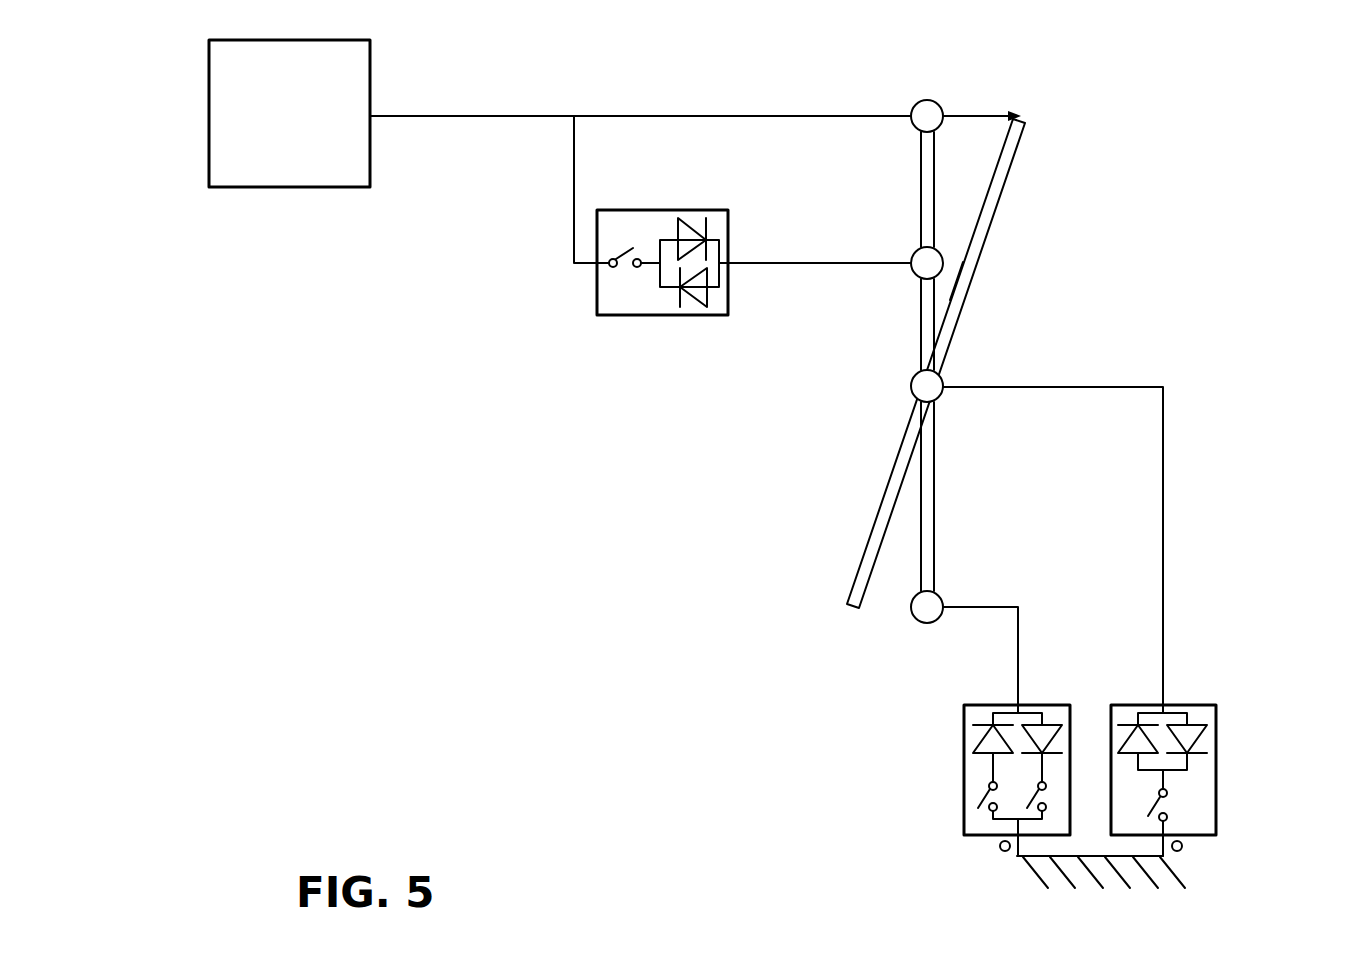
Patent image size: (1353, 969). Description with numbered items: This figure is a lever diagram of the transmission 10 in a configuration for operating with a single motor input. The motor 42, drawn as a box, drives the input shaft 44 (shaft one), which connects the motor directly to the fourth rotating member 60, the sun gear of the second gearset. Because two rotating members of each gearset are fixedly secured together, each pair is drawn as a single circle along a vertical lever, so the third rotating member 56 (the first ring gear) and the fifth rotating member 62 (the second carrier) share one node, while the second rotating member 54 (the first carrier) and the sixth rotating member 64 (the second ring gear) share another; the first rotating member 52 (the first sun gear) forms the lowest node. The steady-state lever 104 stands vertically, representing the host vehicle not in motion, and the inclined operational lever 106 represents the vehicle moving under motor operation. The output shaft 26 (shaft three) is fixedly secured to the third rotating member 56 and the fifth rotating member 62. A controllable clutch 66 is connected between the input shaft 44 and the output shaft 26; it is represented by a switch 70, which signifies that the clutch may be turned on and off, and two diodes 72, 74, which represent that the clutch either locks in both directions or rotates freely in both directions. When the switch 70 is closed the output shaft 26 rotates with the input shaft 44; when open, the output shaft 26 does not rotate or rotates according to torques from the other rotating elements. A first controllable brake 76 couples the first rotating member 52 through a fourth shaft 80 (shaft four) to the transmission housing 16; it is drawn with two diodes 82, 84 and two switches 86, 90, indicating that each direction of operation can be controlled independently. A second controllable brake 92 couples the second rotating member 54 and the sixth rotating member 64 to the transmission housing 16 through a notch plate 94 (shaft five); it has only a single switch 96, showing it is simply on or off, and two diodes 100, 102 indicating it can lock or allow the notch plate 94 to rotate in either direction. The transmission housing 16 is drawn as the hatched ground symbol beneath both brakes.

The transmission 10 is at (1250, 175).
The motor 42 is at (258, 189).
The input shaft 44 is at (434, 118).
The fourth rotating member 60 is at (912, 106).
The fifth rotating member 62 is at (934, 247).
The third rotating member 56 is at (913, 276).
The steady-state lever 104 is at (920, 330).
The second rotating member 54 is at (911, 388).
The sixth rotating member 64 is at (944, 383).
The notch plate 94 is at (1165, 566).
The first rotating member 52 is at (912, 605).
The fourth shaft 80 is at (990, 606).
The output shaft 26 is at (960, 258).
The operational lever 106 is at (976, 300).
The controllable clutch 66 is at (672, 262).
The switch 70 is at (632, 246).
The diode 72 is at (694, 236).
The diode 74 is at (693, 302).
The first controllable brake 76 is at (991, 750).
The diode 82 is at (978, 738).
The diode 84 is at (1058, 736).
The switch 86 is at (975, 797).
The switch 90 is at (1045, 798).
The second controllable brake 92 is at (1204, 753).
The diode 100 is at (1124, 728).
The diode 102 is at (1208, 735).
The switch 96 is at (1172, 808).
The transmission housing 16 is at (1037, 857).